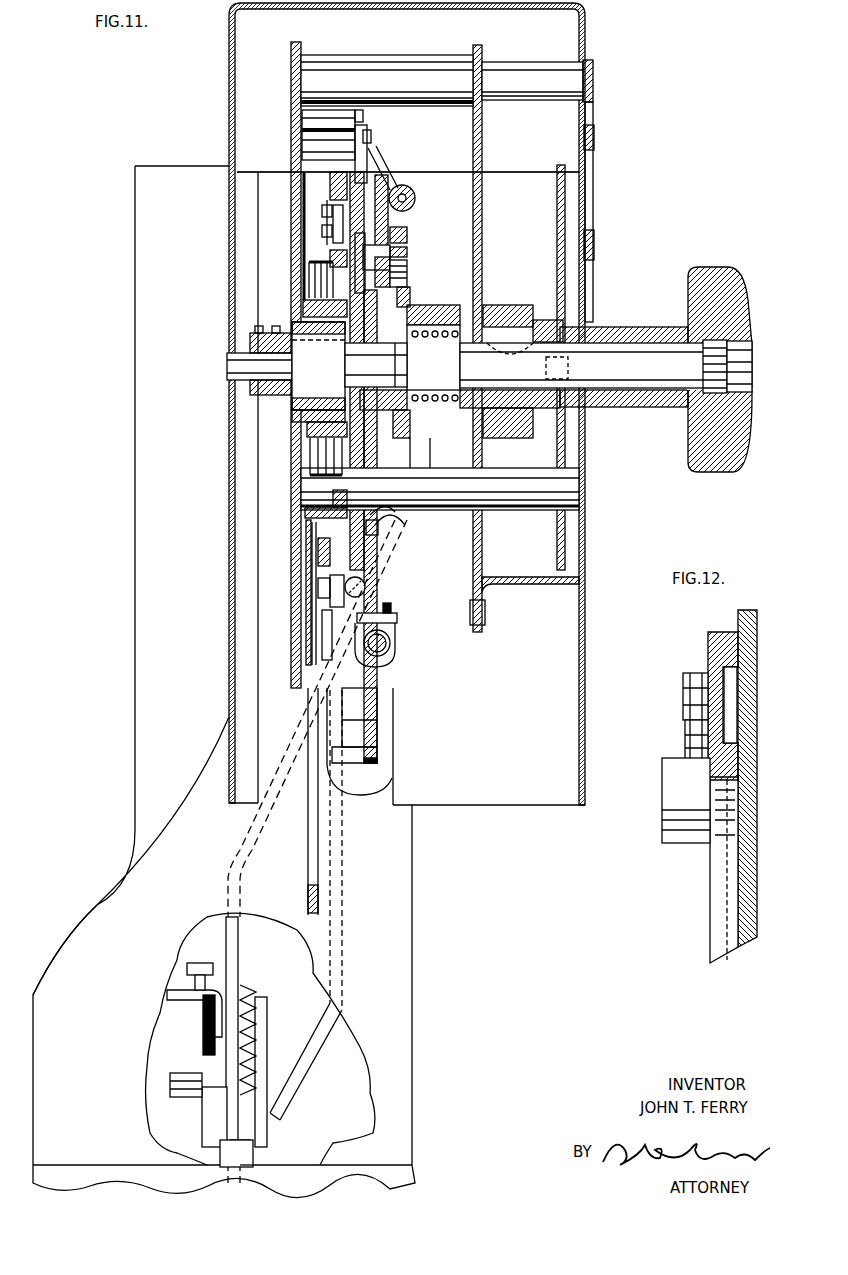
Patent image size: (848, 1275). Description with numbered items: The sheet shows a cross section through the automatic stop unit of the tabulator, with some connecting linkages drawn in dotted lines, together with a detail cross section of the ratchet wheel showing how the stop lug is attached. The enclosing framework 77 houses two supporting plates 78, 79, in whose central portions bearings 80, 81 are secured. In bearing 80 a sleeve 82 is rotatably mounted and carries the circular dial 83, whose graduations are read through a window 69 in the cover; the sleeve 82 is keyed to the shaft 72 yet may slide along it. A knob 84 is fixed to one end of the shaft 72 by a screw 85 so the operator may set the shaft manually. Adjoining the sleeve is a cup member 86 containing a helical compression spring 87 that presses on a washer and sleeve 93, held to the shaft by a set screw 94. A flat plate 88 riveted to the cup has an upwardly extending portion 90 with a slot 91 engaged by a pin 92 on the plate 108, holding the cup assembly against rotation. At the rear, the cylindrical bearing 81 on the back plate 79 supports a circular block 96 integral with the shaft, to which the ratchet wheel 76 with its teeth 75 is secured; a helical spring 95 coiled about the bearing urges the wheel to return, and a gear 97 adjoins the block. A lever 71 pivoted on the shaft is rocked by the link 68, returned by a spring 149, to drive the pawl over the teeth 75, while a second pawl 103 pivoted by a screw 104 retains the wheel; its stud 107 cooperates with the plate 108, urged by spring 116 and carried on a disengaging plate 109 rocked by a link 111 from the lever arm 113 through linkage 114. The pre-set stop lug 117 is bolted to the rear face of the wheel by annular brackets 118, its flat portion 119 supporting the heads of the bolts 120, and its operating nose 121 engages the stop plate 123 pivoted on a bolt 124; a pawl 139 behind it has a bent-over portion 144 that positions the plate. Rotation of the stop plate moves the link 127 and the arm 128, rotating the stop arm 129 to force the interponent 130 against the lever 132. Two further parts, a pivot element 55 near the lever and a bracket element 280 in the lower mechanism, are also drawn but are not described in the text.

In FIG. 11, the pivot pin 55 is at (366, 592).
In FIG. 11, the link 68 is at (378, 672).
In FIG. 11, the window 69 is at (593, 192).
In FIG. 11, the lever 71 is at (376, 567).
In FIG. 11, the shaft 72 is at (452, 355).
In FIG. 11, the teeth 75 is at (380, 590).
In FIG. 11, the ratchet wheel 76 is at (388, 178).
In FIG. 12, the ratchet wheel 76 is at (757, 813).
In FIG. 11, the enclosing framework 77 is at (232, 575).
In FIG. 11, the plate 78 is at (480, 47).
In FIG. 11, the back plate 79 is at (300, 46).
In FIG. 11, the bearing 80 is at (505, 308).
In FIG. 11, the bearing 81 is at (305, 430).
In FIG. 11, the sleeve 82 is at (545, 322).
In FIG. 11, the circular dial 83 is at (557, 207).
In FIG. 11, the knob 84 is at (708, 268).
In FIG. 11, the screw 85 is at (628, 352).
In FIG. 11, the cup member 86 is at (412, 432).
In FIG. 11, the helical compression spring 87 is at (418, 308).
In FIG. 11, the flat plate 88 is at (418, 446).
In FIG. 11, the upwardly extending portion 90 is at (408, 236).
In FIG. 11, the slot 91 is at (412, 266).
In FIG. 11, the pin 92 is at (410, 254).
In FIG. 11, the washer and sleeve 93 is at (375, 390).
In FIG. 11, the set screw 94 is at (370, 357).
In FIG. 11, the helical spring 95 is at (293, 488).
In FIG. 11, the circular block 96 is at (293, 395).
In FIG. 11, the gear 97 is at (251, 343).
In FIG. 11, the second pawl 103 is at (365, 119).
In FIG. 11, the screw 104 is at (400, 175).
In FIG. 11, the stud 107 is at (370, 136).
In FIG. 11, the plate 108 is at (375, 170).
In FIG. 11, the disengaging plate 109 is at (406, 278).
In FIG. 11, the link 111 is at (392, 527).
In FIG. 11, the lever arm 113 is at (202, 1045).
In FIG. 12, the linkage 114 is at (757, 778).
In FIG. 11, the spring 116 is at (408, 192).
In FIG. 11, the pre-set stop lug 117 is at (315, 258).
In FIG. 12, the pre-set stop lug 117 is at (668, 775).
In FIG. 11, the annular brackets 118 is at (320, 196).
In FIG. 12, the annular brackets 118 is at (706, 650).
In FIG. 11, the flat portion 119 is at (335, 242).
In FIG. 12, the flat portion 119 is at (730, 703).
In FIG. 11, the bolts 120 is at (322, 212).
In FIG. 12, the bolts 120 is at (684, 740).
In FIG. 12, the operating nose 121 is at (690, 838).
In FIG. 11, the stop plate 123 is at (320, 586).
In FIG. 11, the bolt 124 is at (326, 603).
In FIG. 11, the link 127 is at (340, 780).
In FIG. 11, the arm 128 is at (265, 1062).
In FIG. 11, the stop arm 129 is at (228, 1166).
In FIG. 11, the interponent 130 is at (220, 1153).
In FIG. 11, the lever 132 is at (205, 1108).
In FIG. 11, the pawl 139 is at (312, 870).
In FIG. 11, the bent-over portion 144 is at (328, 553).
In FIG. 11, the spring 149 is at (395, 623).
In FIG. 11, the bracket 280 is at (165, 1030).